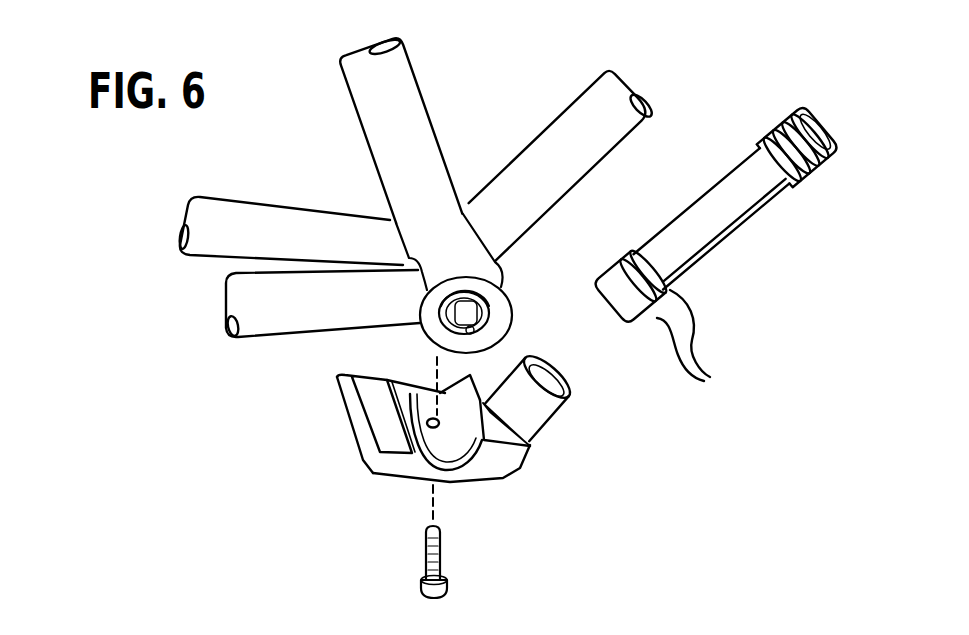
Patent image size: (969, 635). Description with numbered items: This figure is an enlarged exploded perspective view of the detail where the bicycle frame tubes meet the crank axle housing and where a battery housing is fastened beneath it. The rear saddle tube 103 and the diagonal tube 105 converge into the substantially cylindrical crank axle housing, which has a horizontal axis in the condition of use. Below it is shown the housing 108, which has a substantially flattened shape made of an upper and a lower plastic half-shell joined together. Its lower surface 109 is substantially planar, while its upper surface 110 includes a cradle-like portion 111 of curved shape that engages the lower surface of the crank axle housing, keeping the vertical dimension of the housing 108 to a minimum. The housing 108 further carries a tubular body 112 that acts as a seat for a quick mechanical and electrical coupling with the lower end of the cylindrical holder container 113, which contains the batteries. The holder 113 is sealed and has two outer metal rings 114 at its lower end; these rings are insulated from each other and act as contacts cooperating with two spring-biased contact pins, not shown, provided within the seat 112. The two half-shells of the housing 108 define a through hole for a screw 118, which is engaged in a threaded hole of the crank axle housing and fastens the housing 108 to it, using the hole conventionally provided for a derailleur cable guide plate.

The rear saddle tube 103 is at (421, 86).
The diagonal tube 105 is at (557, 120).
The housing 108 is at (349, 462).
The lower surface 109 is at (395, 483).
The upper surface 110 is at (382, 420).
The cradle-like portion 111 is at (460, 437).
The tubular body 112 is at (520, 408).
The cylindrical holder container 113 is at (736, 156).
The outer metal rings 114 is at (717, 344).
The screw 118 is at (443, 542).